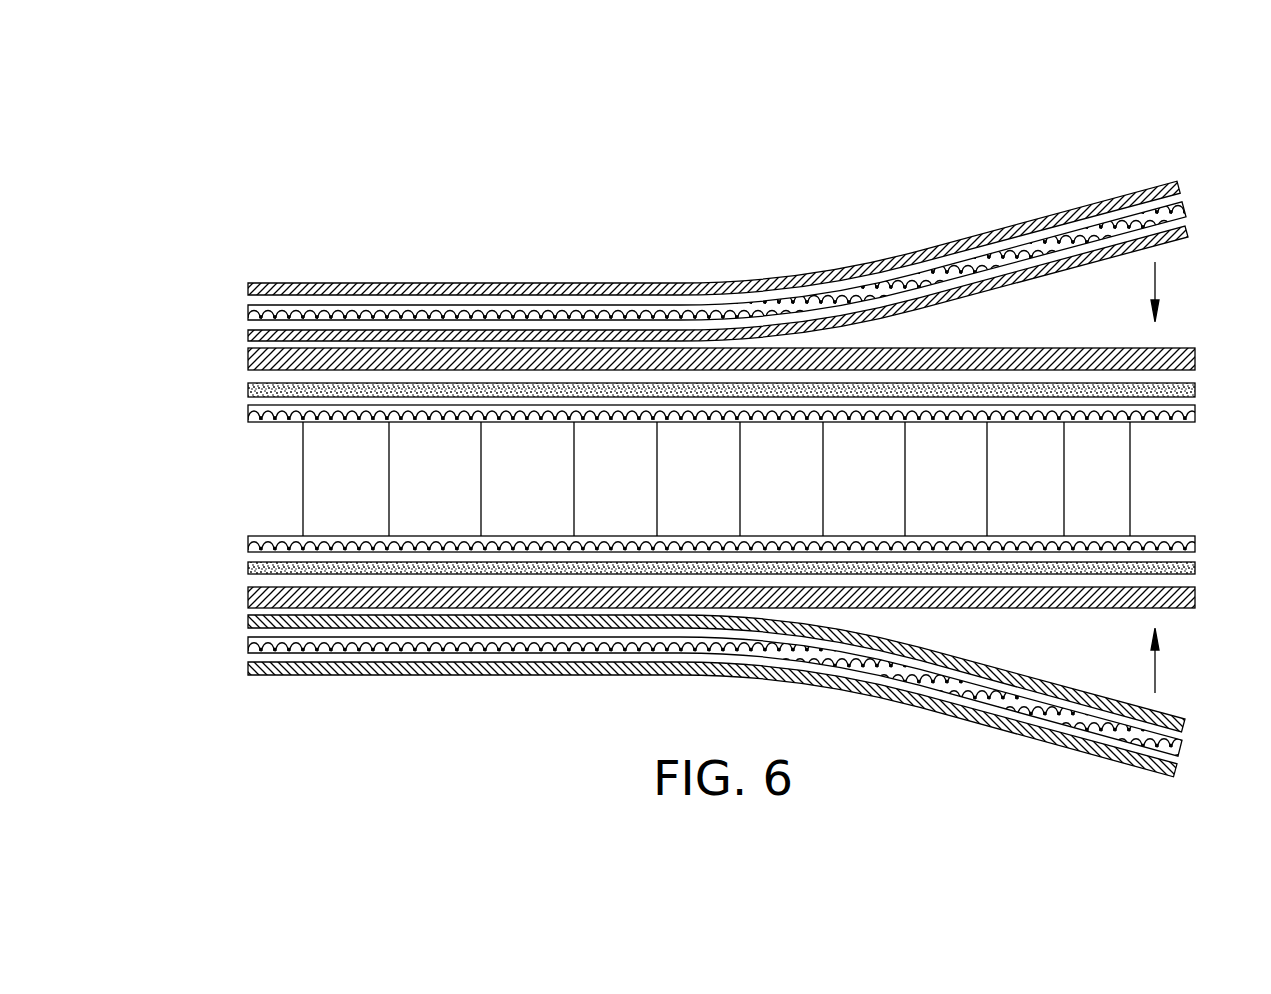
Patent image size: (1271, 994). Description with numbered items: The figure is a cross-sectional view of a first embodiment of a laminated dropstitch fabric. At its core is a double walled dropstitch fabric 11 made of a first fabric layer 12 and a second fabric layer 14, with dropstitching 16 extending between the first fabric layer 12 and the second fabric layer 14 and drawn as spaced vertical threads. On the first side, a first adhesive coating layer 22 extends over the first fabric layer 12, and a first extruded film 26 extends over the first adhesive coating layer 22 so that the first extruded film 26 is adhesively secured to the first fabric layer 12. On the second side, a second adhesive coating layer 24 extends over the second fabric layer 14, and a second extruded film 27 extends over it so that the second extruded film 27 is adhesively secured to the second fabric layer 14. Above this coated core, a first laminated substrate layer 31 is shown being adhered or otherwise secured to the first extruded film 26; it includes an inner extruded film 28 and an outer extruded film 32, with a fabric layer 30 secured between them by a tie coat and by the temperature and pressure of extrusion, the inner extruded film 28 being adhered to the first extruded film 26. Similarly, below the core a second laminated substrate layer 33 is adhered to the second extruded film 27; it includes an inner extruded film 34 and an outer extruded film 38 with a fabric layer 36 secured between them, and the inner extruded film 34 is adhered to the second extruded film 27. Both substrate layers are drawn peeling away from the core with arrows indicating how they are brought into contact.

The dropstitch fabric 11 is at (238, 403).
The first fabric layer 12 is at (1196, 414).
The second fabric layer 14 is at (1196, 544).
The dropstitching 16 is at (1130, 463).
The first adhesive coating layer 22 is at (1196, 390).
The second adhesive coating layer 24 is at (1196, 568).
The first extruded film 26 is at (1196, 358).
The second extruded film 27 is at (1196, 598).
The inner extruded film 28 is at (1188, 230).
The fabric layer 30 is at (1186, 203).
The first laminated substrate layer 31 is at (1106, 197).
The outer extruded film 32 is at (1178, 182).
The second laminated substrate layer 33 is at (1121, 768).
The inner extruded film 34 is at (1188, 728).
The fabric layer 36 is at (1185, 755).
The outer extruded film 38 is at (1178, 773).